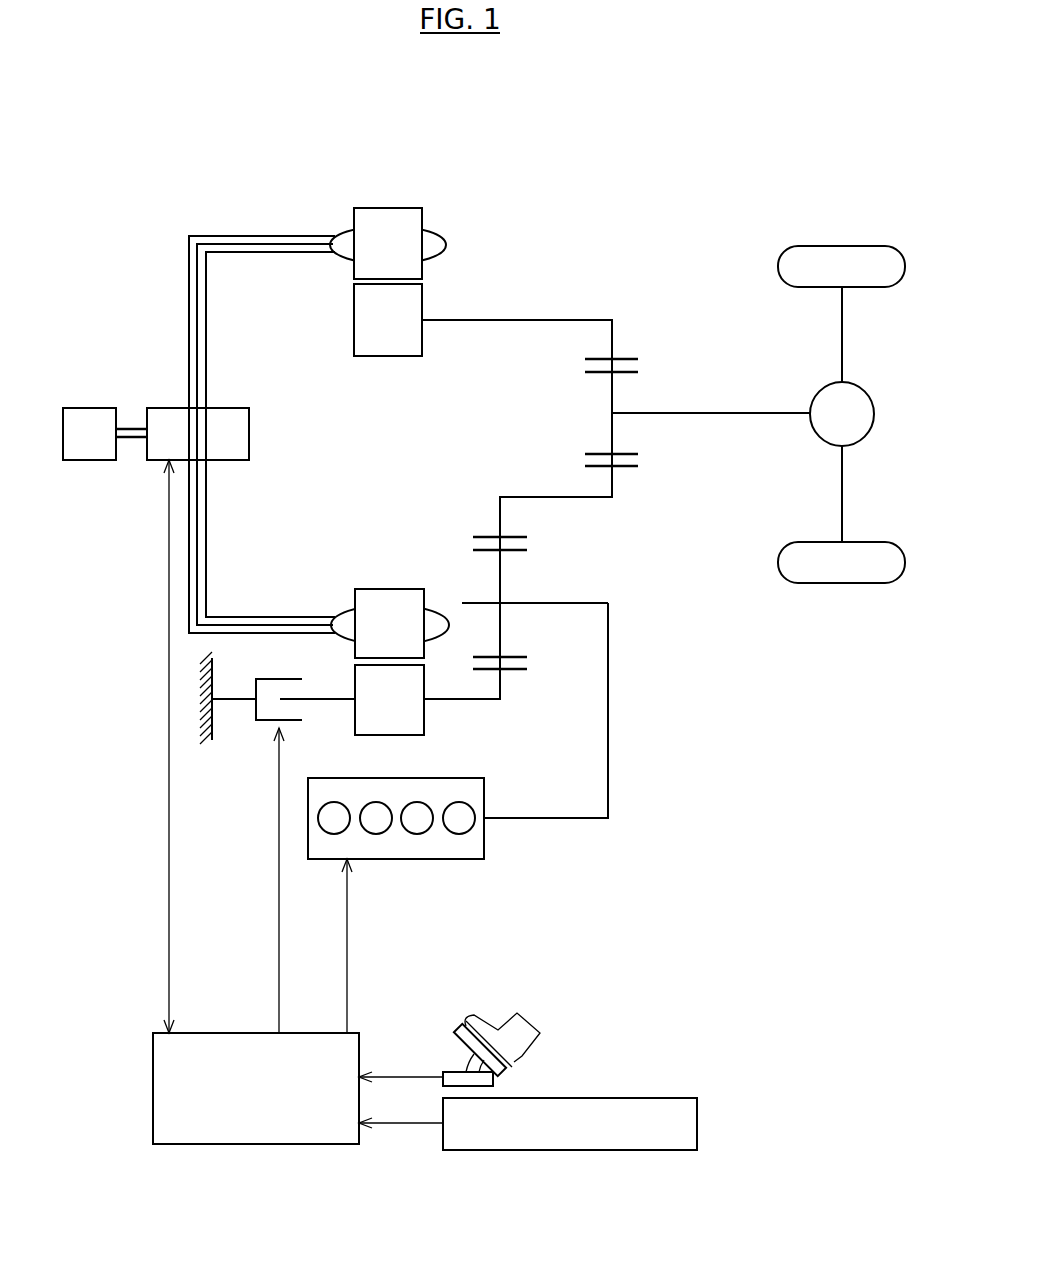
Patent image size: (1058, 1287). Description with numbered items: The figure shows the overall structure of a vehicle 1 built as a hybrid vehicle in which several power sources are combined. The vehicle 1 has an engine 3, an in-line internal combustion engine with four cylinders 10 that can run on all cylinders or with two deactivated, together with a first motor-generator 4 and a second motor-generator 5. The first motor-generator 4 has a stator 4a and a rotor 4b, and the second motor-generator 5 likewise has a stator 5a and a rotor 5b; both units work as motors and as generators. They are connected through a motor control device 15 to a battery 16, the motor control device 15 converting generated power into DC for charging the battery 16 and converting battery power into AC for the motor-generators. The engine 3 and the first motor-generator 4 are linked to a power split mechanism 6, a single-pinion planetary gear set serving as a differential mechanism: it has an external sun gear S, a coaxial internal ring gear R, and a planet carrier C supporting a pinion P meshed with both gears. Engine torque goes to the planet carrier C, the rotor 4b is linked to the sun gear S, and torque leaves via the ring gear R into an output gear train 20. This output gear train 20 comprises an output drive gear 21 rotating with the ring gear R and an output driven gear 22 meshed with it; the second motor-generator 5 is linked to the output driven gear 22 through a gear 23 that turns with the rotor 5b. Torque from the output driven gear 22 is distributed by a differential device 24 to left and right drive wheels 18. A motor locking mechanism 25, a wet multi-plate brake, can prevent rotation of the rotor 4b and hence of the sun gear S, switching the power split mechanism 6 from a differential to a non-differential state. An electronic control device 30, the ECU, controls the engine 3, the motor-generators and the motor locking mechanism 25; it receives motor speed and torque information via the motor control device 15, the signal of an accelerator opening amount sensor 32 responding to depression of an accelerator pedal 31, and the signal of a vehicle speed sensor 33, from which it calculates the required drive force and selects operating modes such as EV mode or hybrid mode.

The vehicle 1 is at (507, 101).
The engine 3 is at (396, 859).
The first motor-generator 4 is at (399, 634).
The stator 4a is at (398, 598).
The rotor 4b is at (418, 725).
The second motor-generator 5 is at (373, 237).
The stator 5a is at (394, 218).
The rotor 5b is at (364, 330).
The power split mechanism 6 is at (500, 589).
The cylinders 10 is at (424, 833).
The motor control device 15 is at (163, 412).
The battery 16 is at (90, 412).
The drive wheels 18 is at (826, 246).
The output gear train 20 is at (551, 448).
The output drive gear 21 is at (590, 473).
The output driven gear 22 is at (590, 453).
The gear 23 is at (634, 358).
The differential device 24 is at (822, 392).
The motor locking mechanism 25 is at (243, 716).
The electronic control device 30 is at (222, 1033).
The accelerator pedal 31 is at (452, 1040).
The accelerator opening amount sensor 32 is at (497, 1082).
The vehicle speed sensor 33 is at (699, 1123).
The ring gear R is at (527, 537).
The pinion P is at (503, 578).
The sun gear S is at (524, 672).
The planet carrier C is at (610, 640).